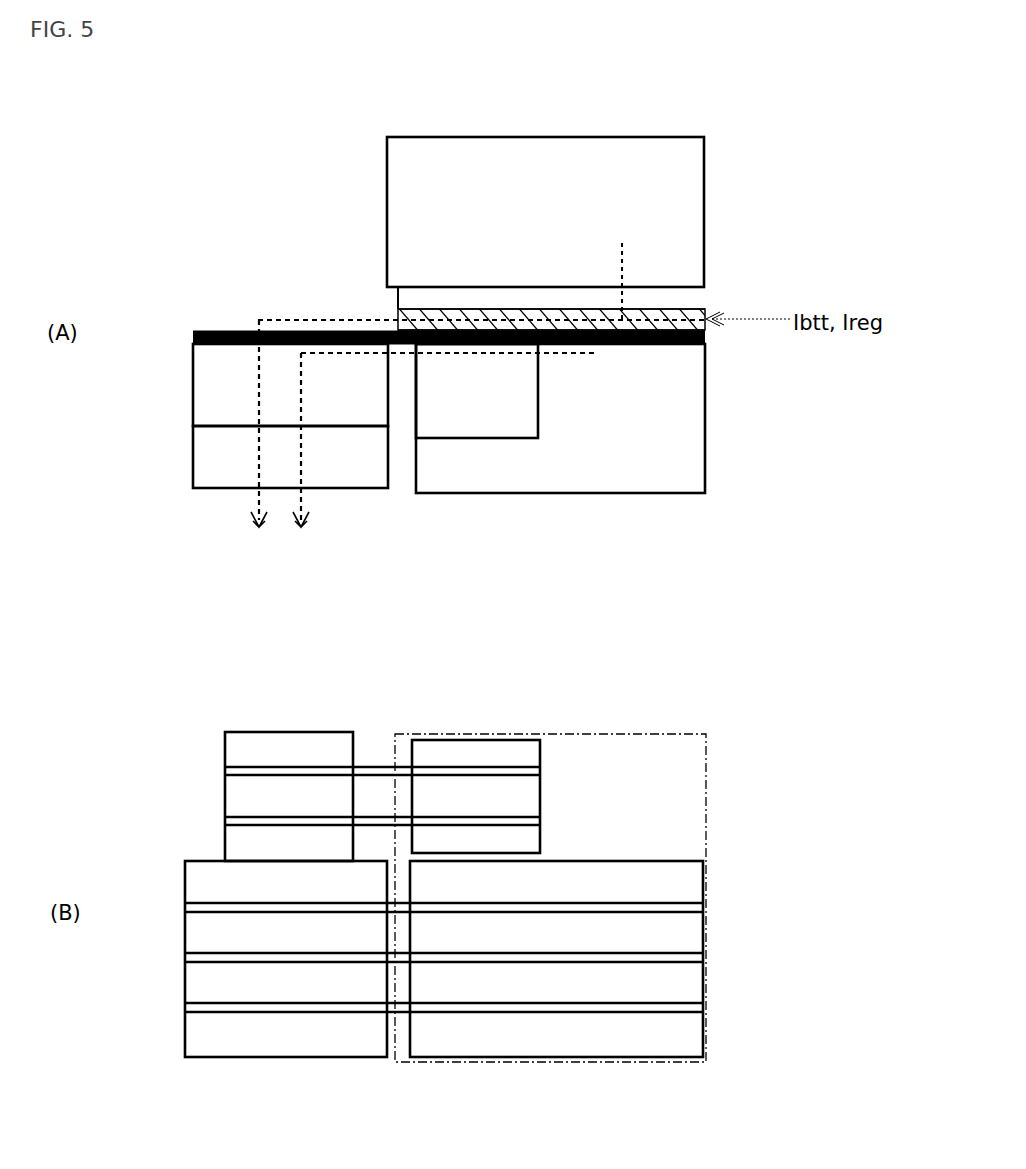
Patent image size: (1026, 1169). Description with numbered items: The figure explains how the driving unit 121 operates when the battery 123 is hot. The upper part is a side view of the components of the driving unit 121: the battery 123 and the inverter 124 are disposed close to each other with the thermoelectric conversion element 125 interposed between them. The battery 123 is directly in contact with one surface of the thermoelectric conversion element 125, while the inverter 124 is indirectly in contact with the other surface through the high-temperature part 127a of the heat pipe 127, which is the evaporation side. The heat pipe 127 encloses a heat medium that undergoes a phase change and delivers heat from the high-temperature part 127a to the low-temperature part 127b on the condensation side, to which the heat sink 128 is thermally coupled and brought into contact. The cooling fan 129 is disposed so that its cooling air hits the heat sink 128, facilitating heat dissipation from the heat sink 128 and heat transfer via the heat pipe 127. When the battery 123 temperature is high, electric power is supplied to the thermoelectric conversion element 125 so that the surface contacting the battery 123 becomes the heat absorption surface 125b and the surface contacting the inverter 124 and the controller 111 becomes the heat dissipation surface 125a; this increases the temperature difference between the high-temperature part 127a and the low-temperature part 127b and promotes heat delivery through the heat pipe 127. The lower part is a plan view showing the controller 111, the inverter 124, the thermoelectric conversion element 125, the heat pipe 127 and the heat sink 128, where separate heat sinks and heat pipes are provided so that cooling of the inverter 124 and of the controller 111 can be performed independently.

The driving unit 121 is at (787, 117).
The battery 123 is at (612, 136).
The inverter 124 is at (623, 495).
The thermoelectric conversion element 125 is at (708, 289).
The heat dissipation surface 125a is at (708, 330).
The heat absorption surface 125b is at (707, 290).
The heat pipe 127 is at (280, 328).
The high-temperature part 127a is at (663, 345).
The low-temperature part 127b is at (222, 330).
The heat sink 128 is at (193, 380).
The cooling fan 129 is at (193, 460).
The controller 111 is at (477, 442).